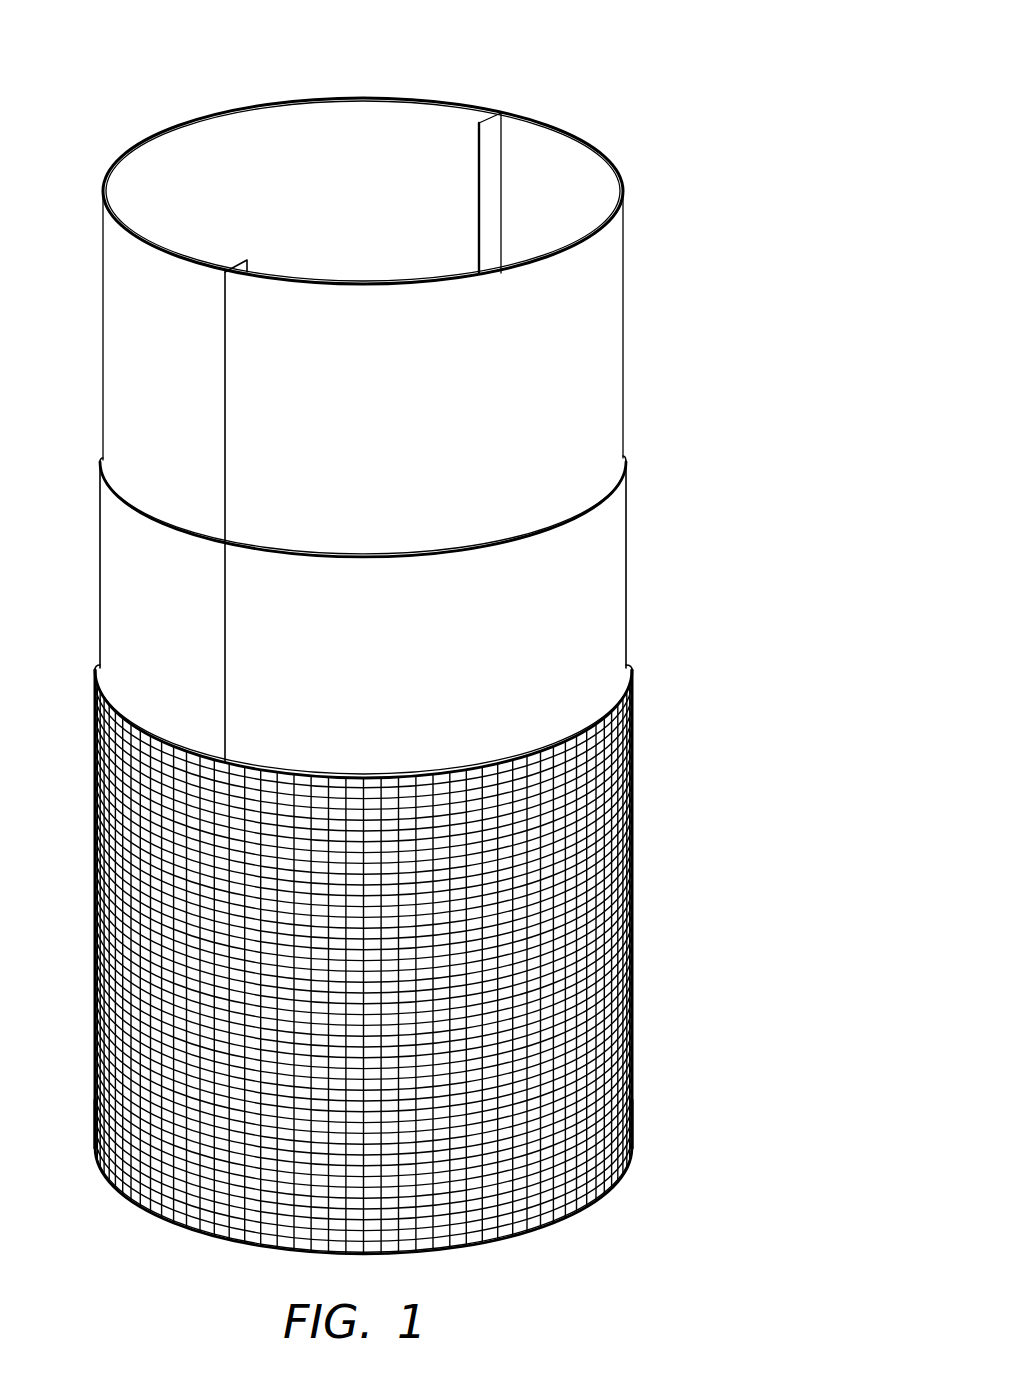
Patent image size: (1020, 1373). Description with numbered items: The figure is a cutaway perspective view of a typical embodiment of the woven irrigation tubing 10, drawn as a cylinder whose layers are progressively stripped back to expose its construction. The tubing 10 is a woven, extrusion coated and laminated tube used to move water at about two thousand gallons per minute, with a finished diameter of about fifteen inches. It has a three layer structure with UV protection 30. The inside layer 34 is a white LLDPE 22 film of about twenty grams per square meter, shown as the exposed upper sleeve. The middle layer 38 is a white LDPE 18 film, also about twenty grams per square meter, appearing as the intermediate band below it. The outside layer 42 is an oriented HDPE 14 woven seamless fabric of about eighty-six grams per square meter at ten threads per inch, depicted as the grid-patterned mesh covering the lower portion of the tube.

The woven irrigation tubing 10 is at (661, 170).
The HDPE 14 is at (632, 832).
The LDPE 18 is at (594, 571).
The LLDPE 22 is at (587, 420).
The UV protection 30 is at (596, 940).
The inside layer 34 is at (580, 320).
The middle layer 38 is at (600, 648).
The outside layer 42 is at (583, 1086).